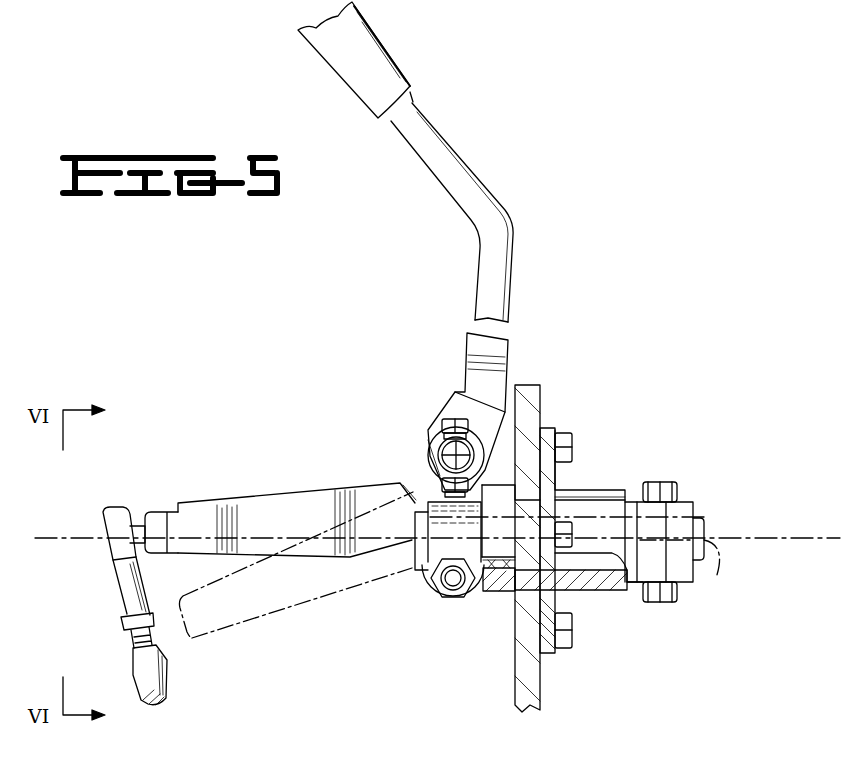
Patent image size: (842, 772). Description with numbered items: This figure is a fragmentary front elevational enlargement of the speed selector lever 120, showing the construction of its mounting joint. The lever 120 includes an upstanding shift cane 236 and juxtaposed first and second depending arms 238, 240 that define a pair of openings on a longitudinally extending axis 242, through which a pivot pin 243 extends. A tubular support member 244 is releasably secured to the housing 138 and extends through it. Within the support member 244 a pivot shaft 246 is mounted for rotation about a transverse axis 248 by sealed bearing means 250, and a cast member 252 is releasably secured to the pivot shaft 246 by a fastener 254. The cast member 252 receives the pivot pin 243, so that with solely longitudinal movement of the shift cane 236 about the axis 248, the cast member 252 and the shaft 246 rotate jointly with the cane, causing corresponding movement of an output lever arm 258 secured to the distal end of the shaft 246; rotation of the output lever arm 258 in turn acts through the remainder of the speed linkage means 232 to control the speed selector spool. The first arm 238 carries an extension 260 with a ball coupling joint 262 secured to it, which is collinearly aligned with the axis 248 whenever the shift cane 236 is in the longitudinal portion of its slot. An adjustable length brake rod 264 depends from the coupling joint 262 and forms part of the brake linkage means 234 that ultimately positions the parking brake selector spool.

The speed selector lever 120 is at (470, 167).
The shift cane 236 is at (508, 270).
The second depending arm 240 is at (449, 404).
The longitudinally extending axis 242 is at (455, 450).
The first depending arm 238 is at (410, 478).
The pivot pin 243 is at (422, 484).
The tubular support member 244 is at (583, 492).
The speed linkage means 232 is at (662, 485).
The output lever arm 258 is at (656, 521).
The pivot shaft 246 is at (705, 530).
The transverse axis 248 is at (714, 564).
The sealed bearing means 250 is at (620, 590).
The housing 138 is at (518, 668).
The fastener 254 is at (478, 600).
The cast member 252 is at (426, 580).
The extension 260 is at (300, 500).
The ball coupling joint 262 is at (128, 520).
The brake linkage means 234 is at (122, 601).
The adjustable length brake rod 264 is at (143, 679).